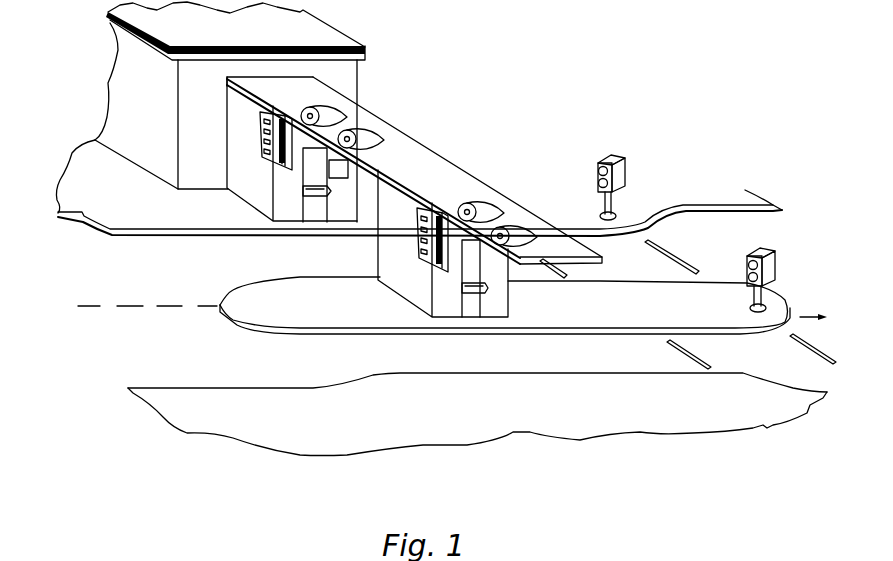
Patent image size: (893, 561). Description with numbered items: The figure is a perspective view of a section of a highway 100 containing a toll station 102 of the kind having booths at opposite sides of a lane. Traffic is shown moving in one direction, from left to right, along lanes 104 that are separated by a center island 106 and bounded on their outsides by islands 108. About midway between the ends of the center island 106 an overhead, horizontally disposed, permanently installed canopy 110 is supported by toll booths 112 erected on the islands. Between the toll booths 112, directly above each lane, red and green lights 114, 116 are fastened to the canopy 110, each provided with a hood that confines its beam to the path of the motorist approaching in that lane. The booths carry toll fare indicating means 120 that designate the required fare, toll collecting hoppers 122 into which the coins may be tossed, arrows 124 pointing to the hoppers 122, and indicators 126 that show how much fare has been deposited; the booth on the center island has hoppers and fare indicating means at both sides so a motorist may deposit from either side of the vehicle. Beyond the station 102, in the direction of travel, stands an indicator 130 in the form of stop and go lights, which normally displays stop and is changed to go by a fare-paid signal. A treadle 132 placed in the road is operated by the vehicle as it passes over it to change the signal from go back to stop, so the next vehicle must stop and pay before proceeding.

The highway 100 is at (106, 374).
The toll station 102 is at (86, 103).
The lanes 104 is at (158, 260).
The center island 106 is at (505, 305).
The islands 108 is at (442, 323).
The canopy 110 is at (423, 155).
The toll booths 112 is at (257, 195).
The red light 114 is at (332, 118).
The green light 116 is at (357, 135).
The toll fare indicating means 120 is at (262, 130).
The toll collecting hoppers 122 is at (488, 291).
The arrows 124 is at (262, 150).
The indicators 126 is at (340, 180).
The indicator 130 is at (620, 174).
The treadle 132 is at (680, 258).